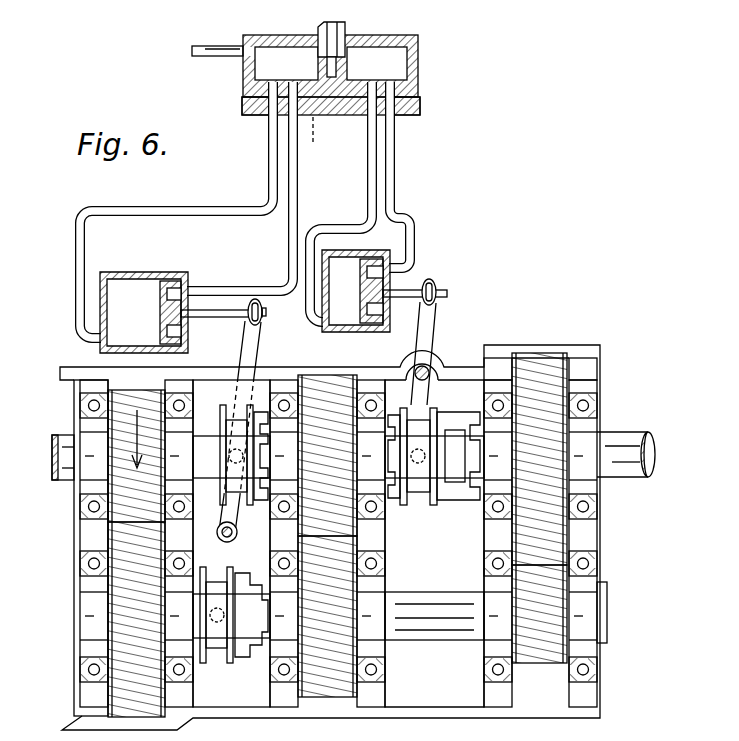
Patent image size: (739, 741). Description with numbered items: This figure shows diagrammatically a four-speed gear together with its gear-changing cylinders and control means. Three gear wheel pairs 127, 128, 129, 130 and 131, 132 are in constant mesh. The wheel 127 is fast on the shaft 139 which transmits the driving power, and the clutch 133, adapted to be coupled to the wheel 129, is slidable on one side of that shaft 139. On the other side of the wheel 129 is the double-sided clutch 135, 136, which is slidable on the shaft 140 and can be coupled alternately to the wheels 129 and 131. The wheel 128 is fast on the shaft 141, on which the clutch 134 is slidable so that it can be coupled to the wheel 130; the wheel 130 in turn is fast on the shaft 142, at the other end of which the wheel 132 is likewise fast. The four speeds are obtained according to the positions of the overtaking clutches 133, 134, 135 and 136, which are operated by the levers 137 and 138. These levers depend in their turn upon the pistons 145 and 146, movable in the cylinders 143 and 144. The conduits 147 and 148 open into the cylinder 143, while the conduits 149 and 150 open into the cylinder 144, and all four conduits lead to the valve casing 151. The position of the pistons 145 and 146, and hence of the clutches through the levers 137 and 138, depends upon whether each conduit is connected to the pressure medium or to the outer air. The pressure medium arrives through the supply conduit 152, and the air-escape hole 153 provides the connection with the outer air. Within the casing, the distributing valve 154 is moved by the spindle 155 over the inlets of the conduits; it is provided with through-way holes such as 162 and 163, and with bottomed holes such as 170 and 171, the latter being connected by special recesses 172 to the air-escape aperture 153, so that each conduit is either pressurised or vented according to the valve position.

The gear wheel 127 is at (121, 466).
The gear wheel 128 is at (130, 612).
The gear wheel 129 is at (316, 404).
The gear wheel 130 is at (338, 609).
The gear wheel 131 is at (547, 372).
The gear wheel 132 is at (538, 634).
The overtaking clutch 133 is at (266, 410).
The overtaking clutch 134 is at (238, 662).
The overtaking clutch 135 is at (391, 499).
The overtaking clutch 136 is at (443, 499).
The lever 137 is at (245, 346).
The lever 138 is at (428, 340).
The shaft 139 is at (65, 438).
The shaft 140 is at (457, 432).
The shaft 141 is at (198, 664).
The shaft 142 is at (449, 604).
The cylinder 143 is at (132, 272).
The cylinder 144 is at (366, 258).
The piston 145 is at (160, 326).
The piston 146 is at (359, 310).
The conduit 147 is at (175, 206).
The conduit 148 is at (288, 240).
The conduit 149 is at (366, 154).
The conduit 150 is at (396, 179).
The valve casing 151 is at (419, 62).
The pressure medium supply conduit 152 is at (226, 56).
The air-escape hole 153 is at (331, 106).
The distributing valve 154 is at (301, 30).
The spindle 155 is at (360, 20).
The through-way hole 162 is at (273, 97).
The through-way hole 163 is at (368, 97).
The bottomed hole 170 is at (243, 107).
The bottomed hole 171 is at (421, 104).
The recess 172 is at (323, 141).